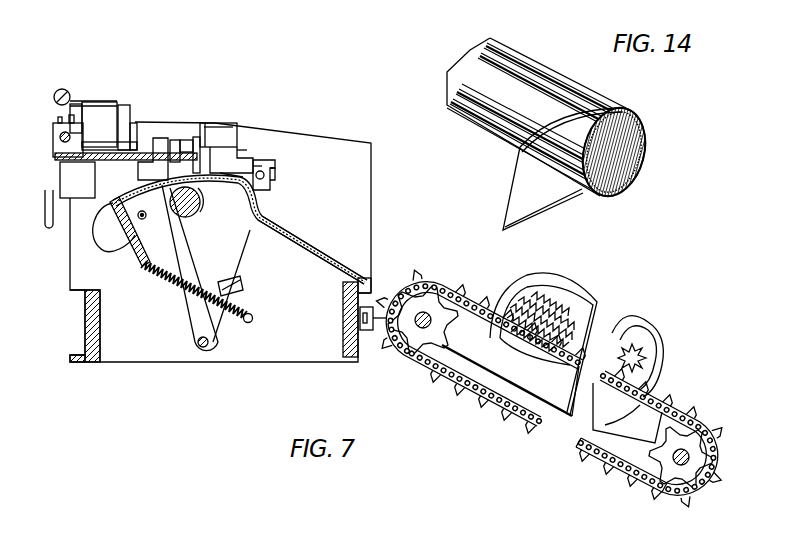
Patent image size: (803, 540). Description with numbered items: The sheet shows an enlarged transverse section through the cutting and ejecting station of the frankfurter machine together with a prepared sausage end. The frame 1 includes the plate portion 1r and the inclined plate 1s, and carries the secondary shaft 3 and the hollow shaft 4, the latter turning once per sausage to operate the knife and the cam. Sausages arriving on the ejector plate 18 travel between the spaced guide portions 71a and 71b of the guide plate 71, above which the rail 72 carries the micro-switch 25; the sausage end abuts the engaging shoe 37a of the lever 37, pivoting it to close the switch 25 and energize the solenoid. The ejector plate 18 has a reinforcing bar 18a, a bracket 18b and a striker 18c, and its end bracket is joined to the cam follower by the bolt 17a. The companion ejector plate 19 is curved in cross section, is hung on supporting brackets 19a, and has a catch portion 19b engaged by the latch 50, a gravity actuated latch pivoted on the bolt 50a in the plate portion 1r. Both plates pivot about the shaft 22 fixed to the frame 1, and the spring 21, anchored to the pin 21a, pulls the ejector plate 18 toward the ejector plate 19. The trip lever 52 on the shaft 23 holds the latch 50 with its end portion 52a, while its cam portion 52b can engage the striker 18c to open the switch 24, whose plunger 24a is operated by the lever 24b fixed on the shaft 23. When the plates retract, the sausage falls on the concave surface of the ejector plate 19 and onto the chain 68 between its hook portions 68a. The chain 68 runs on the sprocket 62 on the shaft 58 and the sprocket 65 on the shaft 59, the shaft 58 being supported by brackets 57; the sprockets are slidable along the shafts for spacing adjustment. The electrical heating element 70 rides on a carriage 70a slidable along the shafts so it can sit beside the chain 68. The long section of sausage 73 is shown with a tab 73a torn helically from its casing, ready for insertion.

In FIG. 7, the frame 1 is at (345, 350).
In FIG. 7, the plate portion 1r is at (350, 150).
In FIG. 7, the inclined plate 1s is at (372, 250).
In FIG. 7, the secondary shaft 3 is at (198, 205).
In FIG. 7, the hollow shaft 4 is at (186, 217).
In FIG. 7, the bolt 17a is at (136, 215).
In FIG. 7, the ejector plate 18 is at (207, 137).
In FIG. 7, the reinforcing bar 18a is at (97, 232).
In FIG. 7, the bracket 18b is at (160, 292).
In FIG. 7, the striker 18c is at (243, 150).
In FIG. 7, the ejector plate 19 is at (257, 213).
In FIG. 7, the supporting brackets 19a is at (253, 247).
In FIG. 7, the catch portion 19b is at (263, 162).
In FIG. 7, the spring 21 is at (210, 272).
In FIG. 7, the pin 21a is at (252, 313).
In FIG. 7, the shaft 22 is at (200, 350).
In FIG. 7, the shaft 23 is at (53, 136).
In FIG. 7, the switch 24 is at (62, 170).
In FIG. 7, the plunger 24a is at (83, 133).
In FIG. 7, the lever 24b is at (62, 89).
In FIG. 7, the switch 25 is at (103, 113).
In FIG. 7, the lever 37 is at (210, 123).
In FIG. 7, the engaging shoe 37a is at (213, 137).
In FIG. 7, the latch 50 is at (272, 168).
In FIG. 7, the bolt 50a is at (280, 178).
In FIG. 7, the trip lever 52 is at (140, 172).
In FIG. 7, the end portion 52a is at (245, 150).
In FIG. 7, the cam portion 52b is at (185, 148).
In FIG. 7, the brackets 57 is at (390, 358).
In FIG. 7, the shaft 58 is at (422, 310).
In FIG. 7, the shaft 59 is at (683, 450).
In FIG. 7, the sprocket 62 is at (437, 370).
In FIG. 7, the sprocket 65 is at (690, 472).
In FIG. 7, the chain 68 is at (531, 420).
In FIG. 7, the hook portions 68a is at (487, 293).
In FIG. 7, the heating element 70 is at (568, 287).
In FIG. 7, the carriage 70a is at (655, 405).
In FIG. 7, the guide plate 71 is at (160, 150).
In FIG. 7, the guide portion 71a is at (267, 172).
In FIG. 7, the guide portion 71b is at (212, 120).
In FIG. 7, the rail 72 is at (125, 122).
In FIG. 14, the long section of sausage 73 is at (622, 138).
In FIG. 14, the tab 73a is at (530, 192).